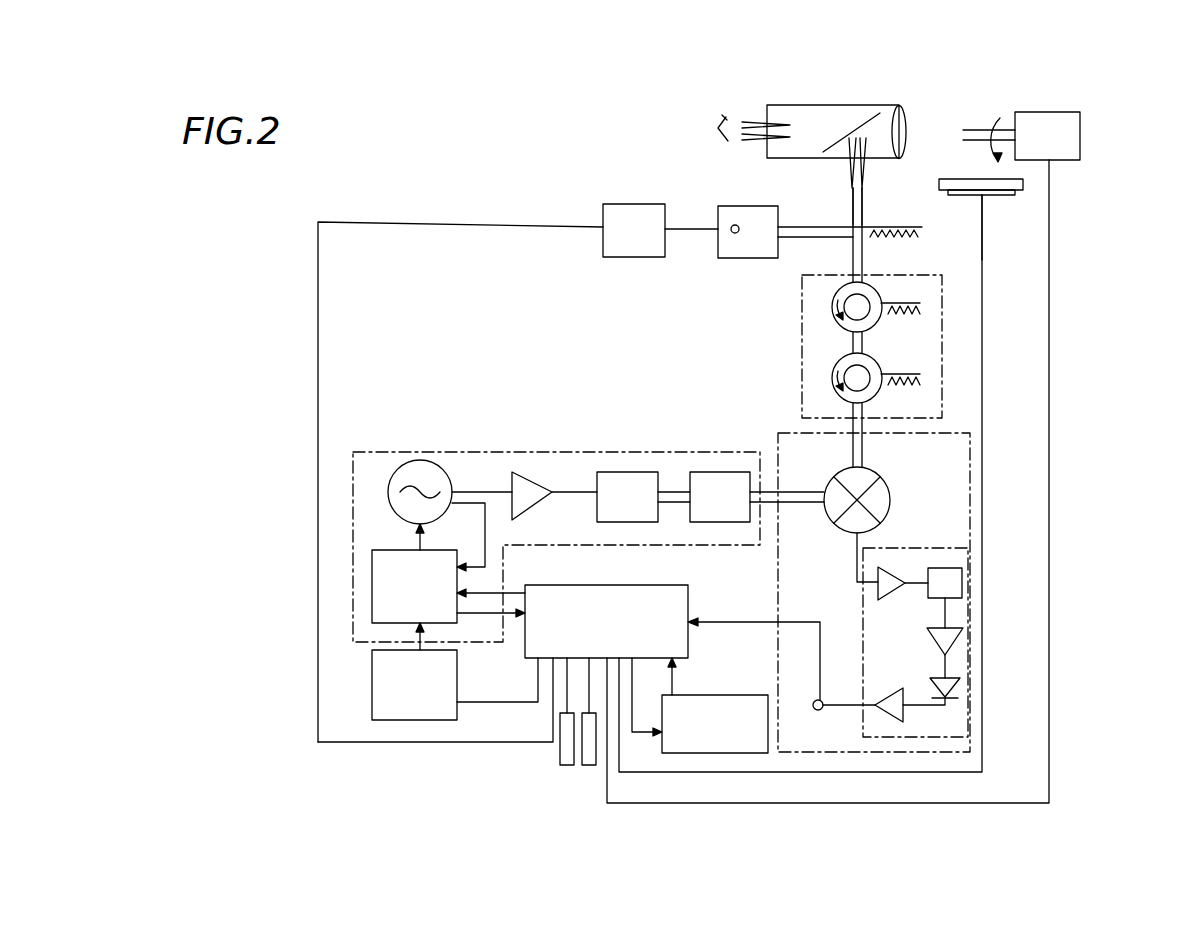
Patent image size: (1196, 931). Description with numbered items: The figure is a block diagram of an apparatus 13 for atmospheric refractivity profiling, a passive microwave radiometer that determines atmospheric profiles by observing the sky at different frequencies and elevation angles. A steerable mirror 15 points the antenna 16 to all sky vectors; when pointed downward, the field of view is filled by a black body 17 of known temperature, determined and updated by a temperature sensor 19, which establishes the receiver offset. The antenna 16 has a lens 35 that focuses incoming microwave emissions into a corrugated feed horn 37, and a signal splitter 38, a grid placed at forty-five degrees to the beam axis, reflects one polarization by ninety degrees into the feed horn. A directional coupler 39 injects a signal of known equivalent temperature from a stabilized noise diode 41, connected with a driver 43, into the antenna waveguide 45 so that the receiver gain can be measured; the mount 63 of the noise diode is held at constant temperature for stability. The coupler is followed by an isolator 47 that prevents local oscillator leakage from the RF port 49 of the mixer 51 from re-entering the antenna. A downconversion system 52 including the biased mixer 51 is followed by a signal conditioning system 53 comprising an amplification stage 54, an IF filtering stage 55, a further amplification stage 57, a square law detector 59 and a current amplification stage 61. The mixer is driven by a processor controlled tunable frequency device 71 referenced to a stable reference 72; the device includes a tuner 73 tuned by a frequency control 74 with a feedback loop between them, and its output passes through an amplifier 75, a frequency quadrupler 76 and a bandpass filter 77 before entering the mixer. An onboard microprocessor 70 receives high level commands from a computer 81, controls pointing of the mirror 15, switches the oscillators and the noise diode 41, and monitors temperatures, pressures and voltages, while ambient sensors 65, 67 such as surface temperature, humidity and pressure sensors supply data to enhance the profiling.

The apparatus 13 is at (303, 400).
The mirror 15 is at (950, 152).
The antenna 16 is at (785, 103).
The black body 17 is at (938, 186).
The temperature sensor 19 is at (990, 198).
The lens 35 is at (900, 128).
The corrugated feed horn 37 is at (866, 163).
The signal splitter 38 is at (868, 108).
The directional coupler 39 is at (870, 240).
The noise diode 41 is at (733, 224).
The driver 43 is at (615, 208).
The antenna waveguide 45 is at (852, 217).
The isolator 47 is at (945, 330).
The RF port 49 is at (853, 467).
The mixer 51 is at (878, 492).
The downconversion system 52 is at (985, 470).
The signal conditioning system 53 is at (938, 743).
The amplification stage 54 is at (883, 573).
The IF filtering stage 55 is at (955, 590).
The further amplification stage 57 is at (950, 640).
The square law detector 59 is at (940, 687).
The current amplification stage 61 is at (893, 717).
The mount 63 is at (722, 262).
The ambient sensor 65 is at (562, 753).
The ambient sensor 67 is at (585, 765).
The microprocessor 70 is at (647, 593).
The tunable frequency device 71 is at (405, 460).
The stable reference 72 is at (372, 690).
The tuner 73 is at (397, 467).
The frequency control 74 is at (372, 565).
The amplifier 75 is at (520, 473).
The frequency quadrupler 76 is at (636, 471).
The bandpass filter 77 is at (716, 471).
The computer 81 is at (758, 712).